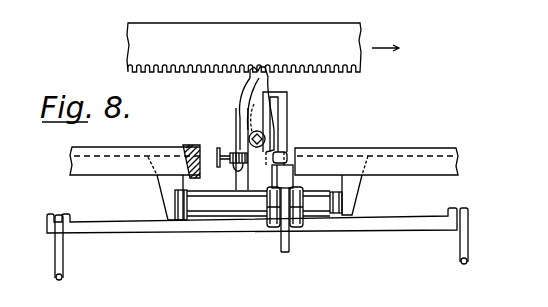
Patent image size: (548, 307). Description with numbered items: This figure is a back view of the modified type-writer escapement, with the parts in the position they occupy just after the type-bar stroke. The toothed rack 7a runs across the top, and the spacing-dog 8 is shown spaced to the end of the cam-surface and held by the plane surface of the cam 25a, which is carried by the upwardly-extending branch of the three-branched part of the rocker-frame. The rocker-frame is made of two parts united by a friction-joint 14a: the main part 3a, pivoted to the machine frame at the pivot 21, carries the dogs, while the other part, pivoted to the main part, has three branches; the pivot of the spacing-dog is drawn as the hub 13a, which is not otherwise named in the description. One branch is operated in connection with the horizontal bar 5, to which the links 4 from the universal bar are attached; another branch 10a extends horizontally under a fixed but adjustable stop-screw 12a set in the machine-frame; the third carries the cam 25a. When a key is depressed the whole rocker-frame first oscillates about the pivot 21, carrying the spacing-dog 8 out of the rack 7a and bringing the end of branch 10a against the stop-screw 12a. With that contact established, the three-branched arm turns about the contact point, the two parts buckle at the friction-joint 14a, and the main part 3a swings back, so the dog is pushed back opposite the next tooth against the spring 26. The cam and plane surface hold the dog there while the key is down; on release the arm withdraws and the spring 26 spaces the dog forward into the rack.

The rack 7a is at (244, 37).
The spacing-dog 8 is at (250, 73).
The cam 25a is at (273, 92).
The pivot hub 13a is at (263, 140).
The spring 26 is at (236, 138).
The stop-screw 12a is at (286, 153).
The main part of the rocker-frame 3a is at (248, 183).
The pivot 21 is at (176, 207).
The friction-joint 14a is at (282, 238).
The branch 10a is at (289, 246).
The horizontal bar 5 is at (117, 236).
The links 4 is at (56, 258).